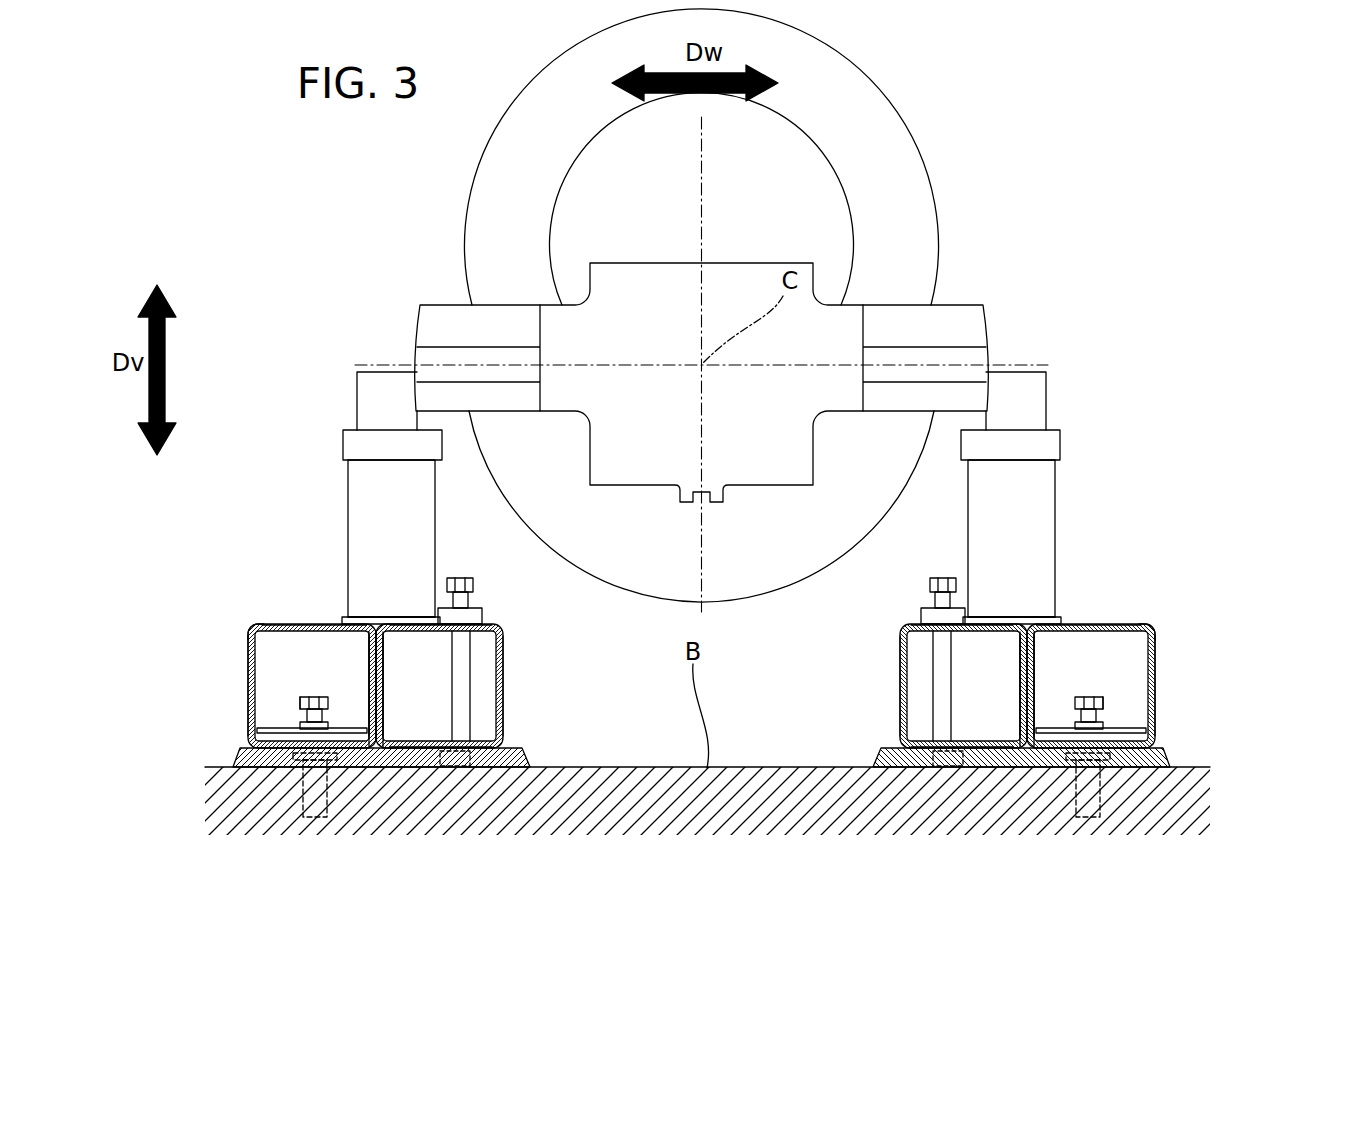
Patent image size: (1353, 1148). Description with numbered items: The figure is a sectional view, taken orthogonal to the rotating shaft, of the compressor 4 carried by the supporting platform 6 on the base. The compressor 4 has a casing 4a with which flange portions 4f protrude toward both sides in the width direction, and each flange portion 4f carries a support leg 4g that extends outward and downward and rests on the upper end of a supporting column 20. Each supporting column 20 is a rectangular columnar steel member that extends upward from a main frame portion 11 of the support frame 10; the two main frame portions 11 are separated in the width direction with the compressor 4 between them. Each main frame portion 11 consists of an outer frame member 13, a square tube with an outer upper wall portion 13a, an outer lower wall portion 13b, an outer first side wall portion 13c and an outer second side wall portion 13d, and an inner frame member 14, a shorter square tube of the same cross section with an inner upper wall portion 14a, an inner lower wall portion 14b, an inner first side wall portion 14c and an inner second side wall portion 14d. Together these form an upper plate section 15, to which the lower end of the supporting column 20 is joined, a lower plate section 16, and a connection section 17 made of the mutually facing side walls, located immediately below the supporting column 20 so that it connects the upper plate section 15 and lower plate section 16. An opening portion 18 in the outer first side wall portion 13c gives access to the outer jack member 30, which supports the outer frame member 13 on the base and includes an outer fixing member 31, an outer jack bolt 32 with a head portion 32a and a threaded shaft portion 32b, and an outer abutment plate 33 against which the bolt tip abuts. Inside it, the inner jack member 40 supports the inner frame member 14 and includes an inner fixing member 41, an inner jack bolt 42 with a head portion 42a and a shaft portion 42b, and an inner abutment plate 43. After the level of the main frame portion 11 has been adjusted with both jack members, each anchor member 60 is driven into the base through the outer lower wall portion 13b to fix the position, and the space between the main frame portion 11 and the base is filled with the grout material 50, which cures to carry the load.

The compressor 4 is at (833, 167).
The casing 4a is at (905, 240).
The flange portion 4f is at (414, 352).
The support leg 4g is at (368, 372).
The supporting platform 6 is at (1212, 470).
The support frame 10 is at (985, 603).
The main frame portion 11 is at (248, 657).
The outer frame member 13 is at (250, 640).
The outer upper wall portion 13a is at (256, 624).
The outer lower wall portion 13b is at (300, 730).
The outer first side wall portion 13c is at (248, 686).
The outer second side wall portion 13d is at (355, 748).
The inner frame member 14 is at (503, 637).
The inner upper wall portion 14a is at (497, 624).
The inner lower wall portion 14b is at (502, 742).
The inner first side wall portion 14c is at (392, 748).
The inner second side wall portion 14d is at (503, 700).
The upper plate section 15 is at (363, 612).
The lower plate section 16 is at (423, 748).
The connection section 17 is at (342, 907).
The opening portion 18 is at (248, 670).
The supporting column 20 is at (348, 478).
The outer jack member 30 is at (248, 702).
The outer fixing member 31 is at (367, 617).
The outer jack bolt 32 is at (310, 697).
The head portion 32a is at (330, 722).
The shaft portion 32b is at (272, 701).
The outer abutment plate 33 is at (303, 803).
The inner jack member 40 is at (492, 715).
The inner fixing member 41 is at (478, 624).
The inner jack bolt 42 is at (455, 577).
The head portion 42a is at (473, 607).
The shaft portion 42b is at (471, 682).
The inner abutment plate 43 is at (518, 758).
The grout material 50 is at (236, 750).
The anchor member 60 is at (265, 823).